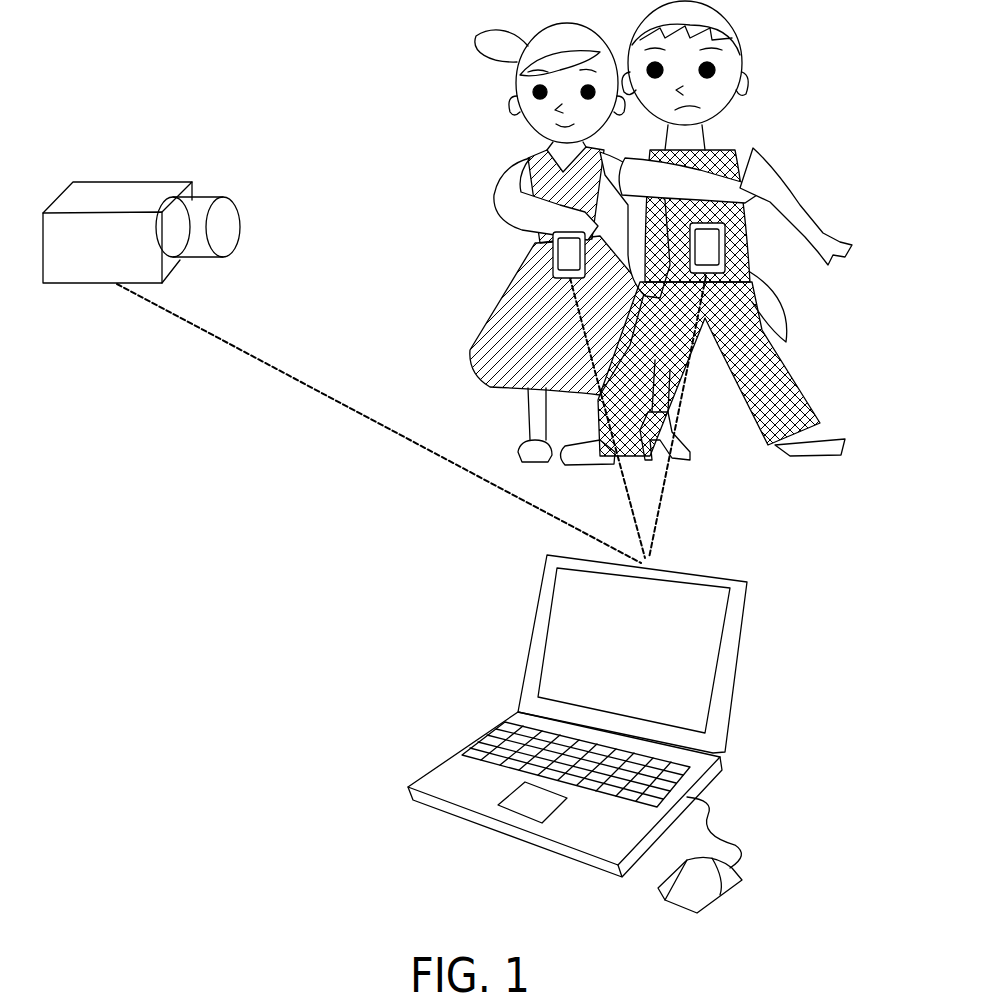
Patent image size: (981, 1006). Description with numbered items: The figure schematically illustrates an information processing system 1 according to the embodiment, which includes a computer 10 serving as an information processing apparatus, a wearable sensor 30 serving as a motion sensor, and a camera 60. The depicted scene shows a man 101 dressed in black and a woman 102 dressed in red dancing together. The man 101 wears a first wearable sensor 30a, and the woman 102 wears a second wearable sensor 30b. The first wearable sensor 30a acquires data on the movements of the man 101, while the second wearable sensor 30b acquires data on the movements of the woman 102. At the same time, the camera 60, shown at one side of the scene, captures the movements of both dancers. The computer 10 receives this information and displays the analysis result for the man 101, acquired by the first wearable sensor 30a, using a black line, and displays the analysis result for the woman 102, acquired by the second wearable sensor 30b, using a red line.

The information processing system 1 is at (256, 568).
The computer 10 is at (433, 768).
The wearable sensor 30 is at (656, 259).
The first wearable sensor 30a is at (712, 267).
The second wearable sensor 30b is at (568, 250).
The camera 60 is at (127, 181).
The man 101 is at (757, 147).
The woman 102 is at (516, 165).